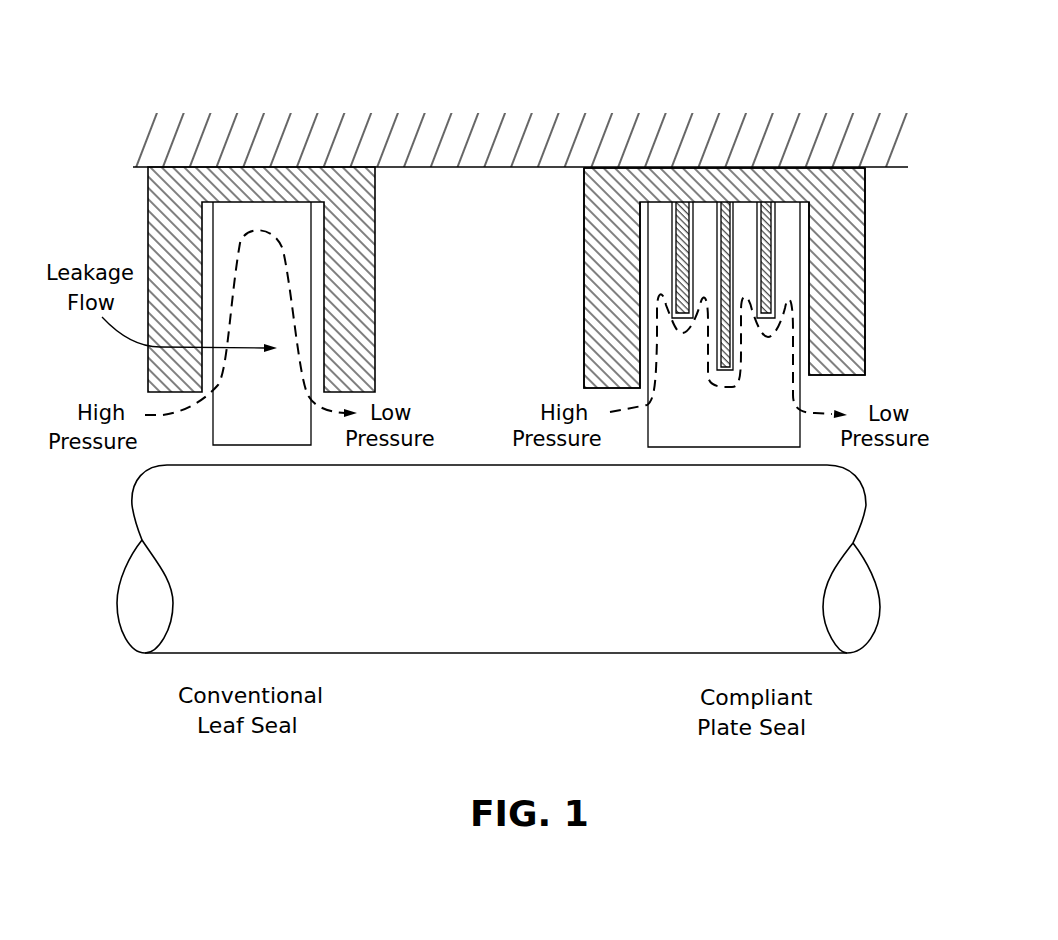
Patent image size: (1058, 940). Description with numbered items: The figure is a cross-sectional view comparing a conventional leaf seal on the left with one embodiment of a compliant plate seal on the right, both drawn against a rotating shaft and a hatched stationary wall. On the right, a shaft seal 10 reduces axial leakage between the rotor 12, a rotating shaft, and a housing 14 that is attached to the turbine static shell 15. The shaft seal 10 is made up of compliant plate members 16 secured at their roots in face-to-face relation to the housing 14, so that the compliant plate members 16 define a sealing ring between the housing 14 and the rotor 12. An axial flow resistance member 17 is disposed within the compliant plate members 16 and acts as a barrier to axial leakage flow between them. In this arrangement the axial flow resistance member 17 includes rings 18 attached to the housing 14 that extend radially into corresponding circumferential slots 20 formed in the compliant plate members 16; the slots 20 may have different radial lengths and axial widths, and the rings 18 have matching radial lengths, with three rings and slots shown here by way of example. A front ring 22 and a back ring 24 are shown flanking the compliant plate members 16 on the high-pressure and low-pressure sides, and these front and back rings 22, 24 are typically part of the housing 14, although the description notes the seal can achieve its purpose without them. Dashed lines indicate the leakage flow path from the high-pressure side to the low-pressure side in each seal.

The shaft seal 10 is at (663, 102).
The rotor 12 is at (800, 555).
The housing 14 is at (783, 188).
The turbine static shell 15 is at (478, 128).
The compliant plate members 16 is at (757, 415).
The axial flow resistance member 17 is at (740, 168).
The rings 18 is at (730, 247).
The circumferential slots 20 is at (705, 386).
The front ring 22 is at (613, 250).
The back ring 24 is at (847, 329).